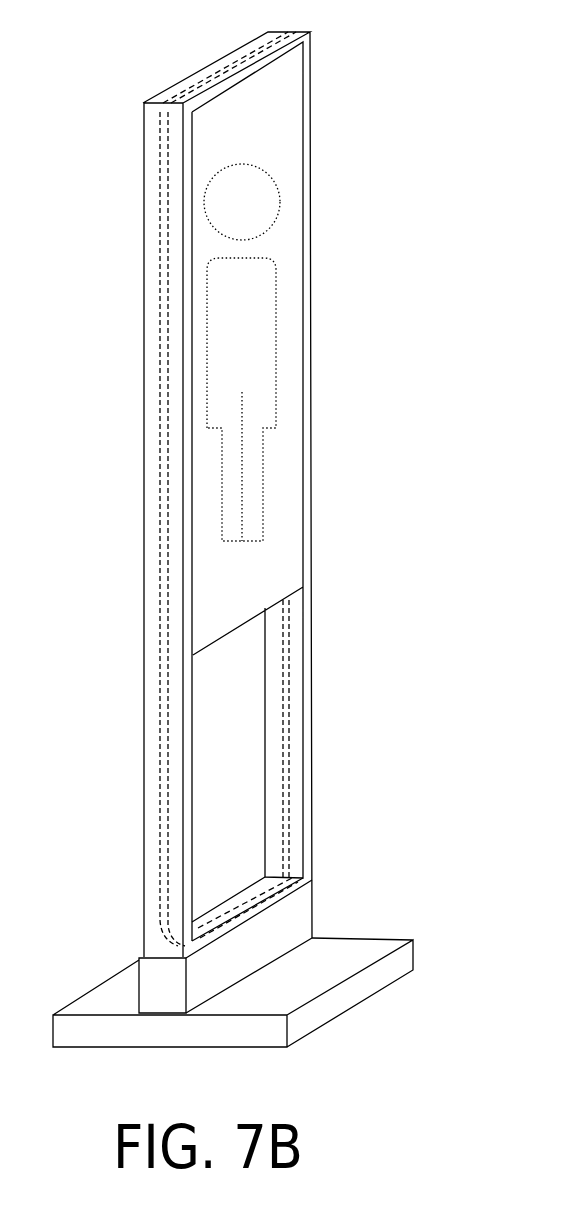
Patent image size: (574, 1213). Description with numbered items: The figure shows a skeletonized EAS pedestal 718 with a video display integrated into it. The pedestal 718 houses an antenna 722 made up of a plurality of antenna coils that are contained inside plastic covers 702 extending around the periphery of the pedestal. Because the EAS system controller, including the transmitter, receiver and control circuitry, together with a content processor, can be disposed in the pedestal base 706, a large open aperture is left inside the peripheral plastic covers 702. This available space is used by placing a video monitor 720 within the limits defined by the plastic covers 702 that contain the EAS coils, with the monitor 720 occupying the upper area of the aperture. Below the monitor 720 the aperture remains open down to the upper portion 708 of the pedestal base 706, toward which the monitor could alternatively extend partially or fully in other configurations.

The plastic covers 702 is at (145, 473).
The pedestal base 706 is at (303, 925).
The upper portion of the pedestal base 708 is at (240, 866).
The skeletonized EAS pedestal 718 is at (100, 127).
The video monitor 720 is at (280, 565).
The antenna 722 is at (167, 625).